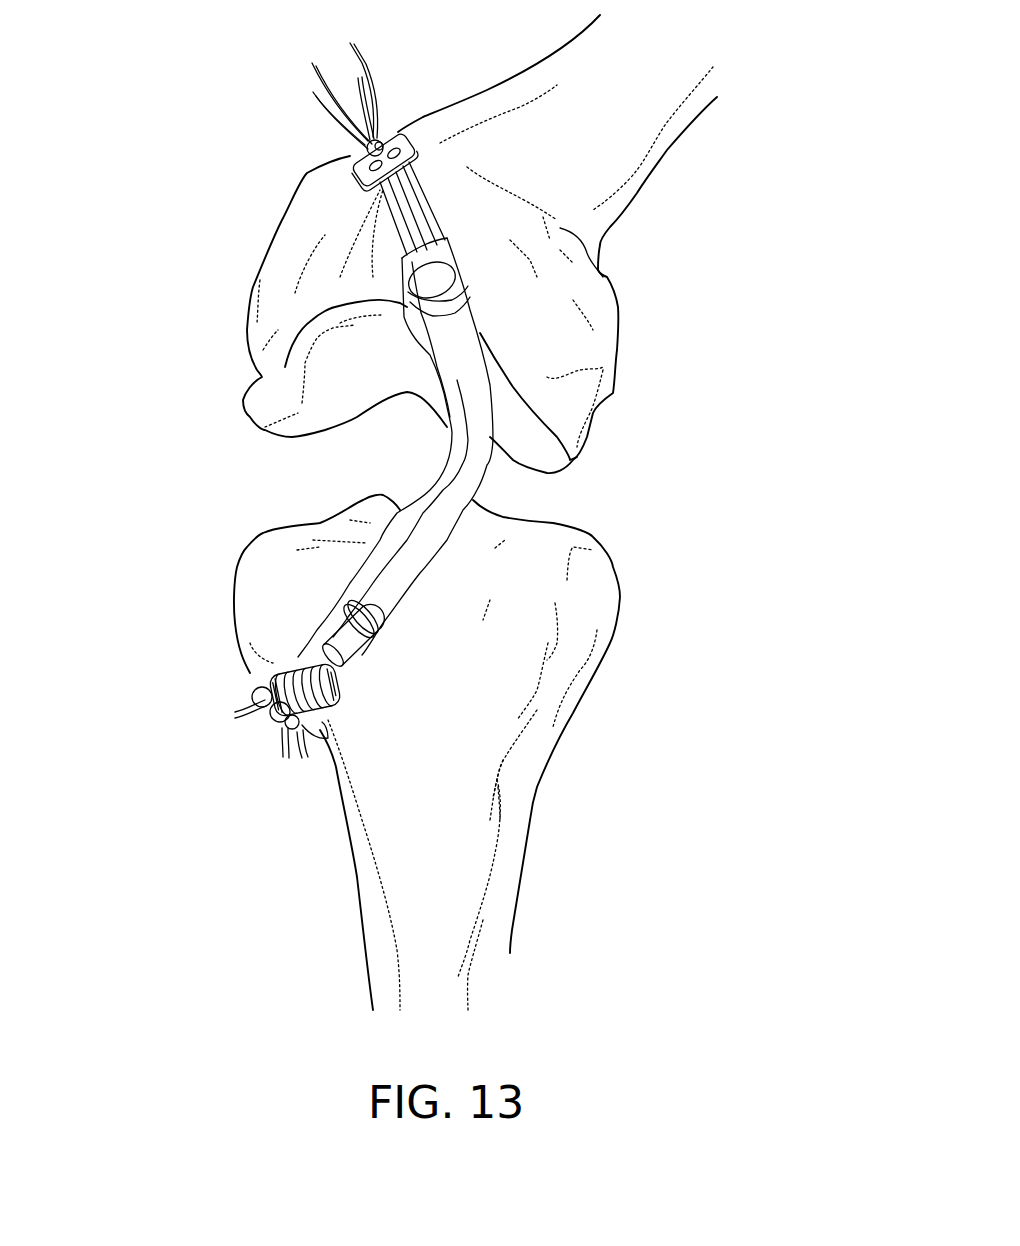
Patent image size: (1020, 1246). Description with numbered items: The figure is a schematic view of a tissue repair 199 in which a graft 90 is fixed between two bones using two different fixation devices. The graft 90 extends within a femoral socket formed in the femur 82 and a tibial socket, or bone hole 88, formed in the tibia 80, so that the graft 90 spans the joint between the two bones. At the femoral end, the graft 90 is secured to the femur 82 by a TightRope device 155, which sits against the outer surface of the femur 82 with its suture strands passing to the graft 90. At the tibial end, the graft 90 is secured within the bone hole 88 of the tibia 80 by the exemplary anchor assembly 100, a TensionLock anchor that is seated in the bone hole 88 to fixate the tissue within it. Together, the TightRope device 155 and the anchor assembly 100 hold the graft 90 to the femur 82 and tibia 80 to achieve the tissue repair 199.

The tibia 80 is at (593, 605).
The femur 82 is at (580, 343).
The bone hole 88 is at (343, 607).
The graft 90 is at (447, 465).
The anchor assembly 100 is at (237, 692).
The TightRope device 155 is at (347, 155).
The tissue repair 199 is at (233, 483).